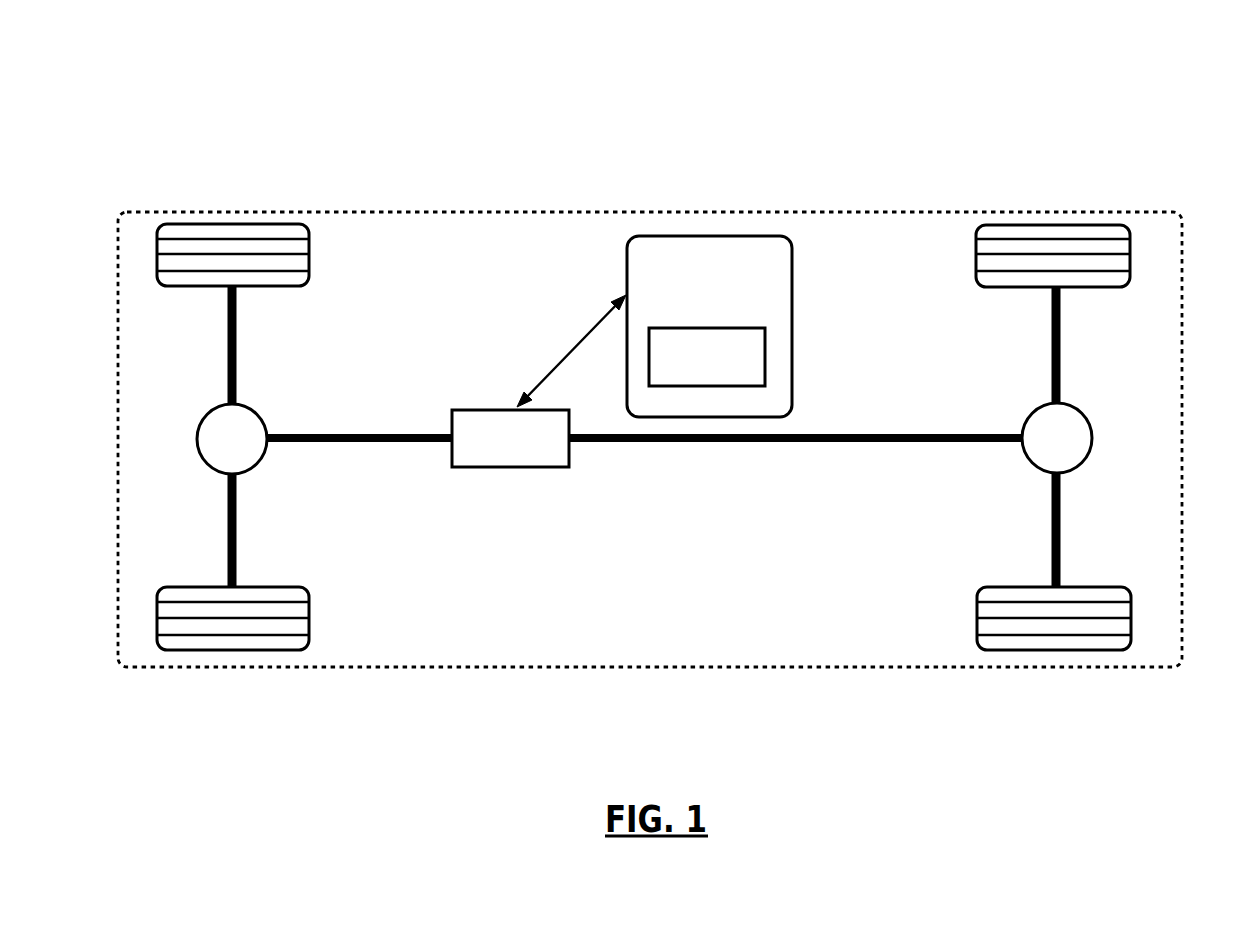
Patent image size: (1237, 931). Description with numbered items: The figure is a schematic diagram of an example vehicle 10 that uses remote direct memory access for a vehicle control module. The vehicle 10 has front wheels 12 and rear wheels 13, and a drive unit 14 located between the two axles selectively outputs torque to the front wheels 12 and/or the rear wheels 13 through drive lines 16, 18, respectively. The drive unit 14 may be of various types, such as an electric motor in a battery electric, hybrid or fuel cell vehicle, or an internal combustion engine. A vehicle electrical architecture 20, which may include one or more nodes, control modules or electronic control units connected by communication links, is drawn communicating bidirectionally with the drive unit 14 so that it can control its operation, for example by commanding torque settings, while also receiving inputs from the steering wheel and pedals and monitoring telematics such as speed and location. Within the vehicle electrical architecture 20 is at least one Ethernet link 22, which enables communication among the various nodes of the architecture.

The vehicle 10 is at (1173, 109).
The front wheels 12 is at (1034, 225).
The rear wheels 13 is at (206, 224).
The drive unit 14 is at (465, 467).
The drive line 16 is at (1027, 452).
The drive line 18 is at (203, 454).
The vehicle electrical architecture 20 is at (708, 236).
The Ethernet link 22 is at (765, 357).